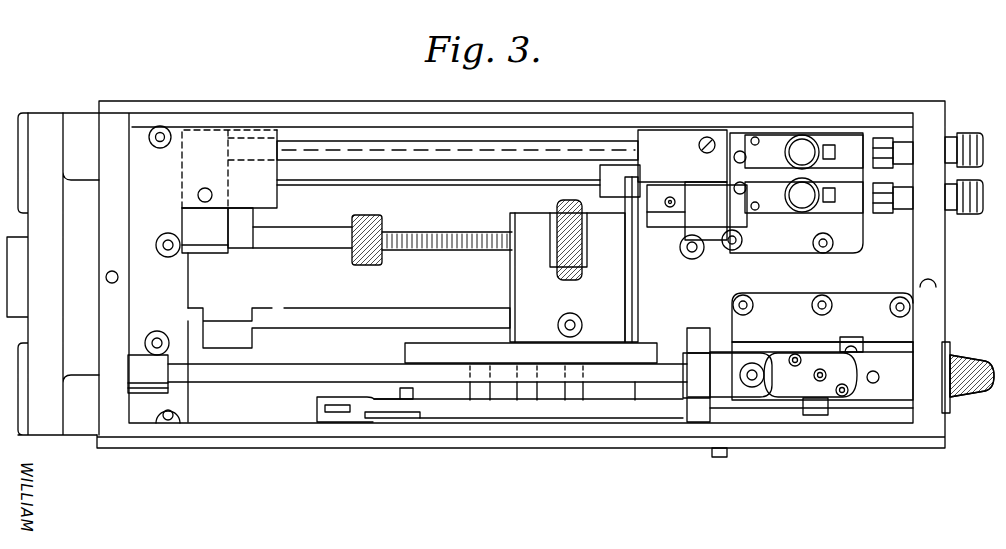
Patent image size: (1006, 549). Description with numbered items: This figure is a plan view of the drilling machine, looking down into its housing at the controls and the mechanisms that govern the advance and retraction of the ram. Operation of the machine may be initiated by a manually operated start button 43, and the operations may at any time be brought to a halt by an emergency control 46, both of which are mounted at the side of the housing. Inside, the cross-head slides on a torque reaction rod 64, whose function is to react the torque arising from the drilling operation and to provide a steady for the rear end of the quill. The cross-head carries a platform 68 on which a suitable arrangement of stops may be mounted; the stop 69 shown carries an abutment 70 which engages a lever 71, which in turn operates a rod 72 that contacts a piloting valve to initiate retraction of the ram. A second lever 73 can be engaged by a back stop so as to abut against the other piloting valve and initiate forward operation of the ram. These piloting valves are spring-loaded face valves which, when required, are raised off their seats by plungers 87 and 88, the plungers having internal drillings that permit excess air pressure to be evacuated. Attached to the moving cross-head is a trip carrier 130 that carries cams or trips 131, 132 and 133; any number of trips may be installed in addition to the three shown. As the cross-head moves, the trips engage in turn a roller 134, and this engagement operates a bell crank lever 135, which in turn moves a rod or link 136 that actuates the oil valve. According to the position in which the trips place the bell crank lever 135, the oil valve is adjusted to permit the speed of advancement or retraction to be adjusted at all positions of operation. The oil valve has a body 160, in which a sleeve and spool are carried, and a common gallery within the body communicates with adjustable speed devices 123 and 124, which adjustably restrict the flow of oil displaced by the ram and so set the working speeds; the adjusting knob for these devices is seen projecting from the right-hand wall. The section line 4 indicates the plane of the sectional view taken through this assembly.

The section line 4- 4 is at (950, 282).
The start button 43 is at (973, 213).
The emergency control 46 is at (973, 135).
The torque reaction rod 64 is at (340, 302).
The platform 68 is at (512, 278).
The stop 69 is at (534, 224).
The abutment 70 is at (381, 219).
The lever 71 is at (193, 225).
The rod 72 is at (318, 152).
The lever 73 is at (715, 240).
The plunger 87 is at (738, 150).
The plunger 88 is at (738, 192).
The adjustable speed device 123 is at (985, 344).
The adjustable speed device 124 is at (980, 358).
The trip carrier 130 is at (416, 350).
The trip 131 is at (478, 393).
The trip 132 is at (525, 393).
The trip 133 is at (570, 393).
The roller 134 is at (413, 398).
The bell crank lever 135 is at (388, 421).
The rod or link 136 is at (655, 408).
The body 160 is at (888, 383).